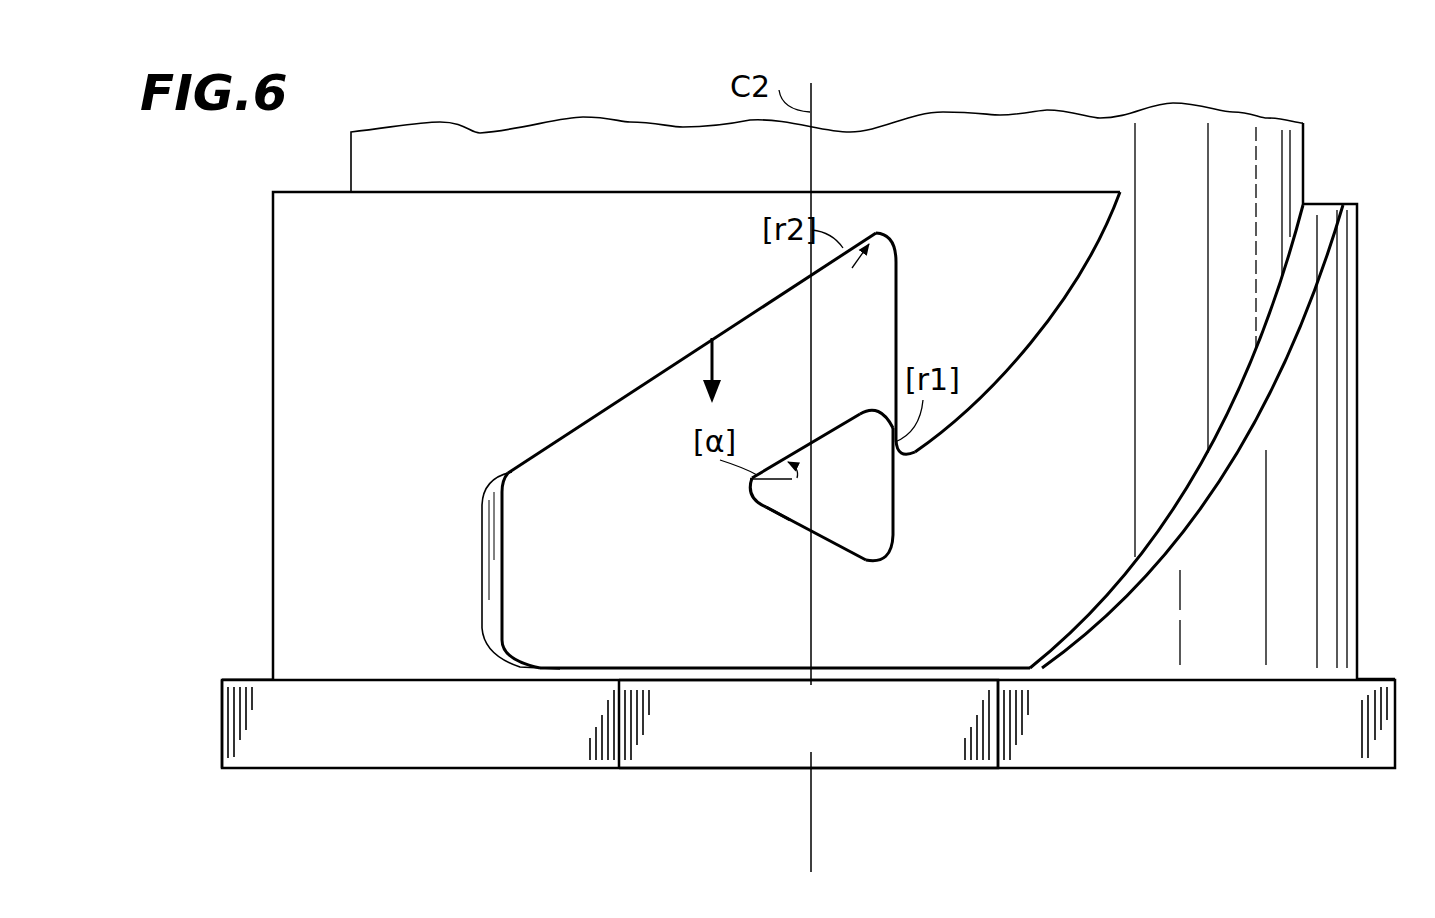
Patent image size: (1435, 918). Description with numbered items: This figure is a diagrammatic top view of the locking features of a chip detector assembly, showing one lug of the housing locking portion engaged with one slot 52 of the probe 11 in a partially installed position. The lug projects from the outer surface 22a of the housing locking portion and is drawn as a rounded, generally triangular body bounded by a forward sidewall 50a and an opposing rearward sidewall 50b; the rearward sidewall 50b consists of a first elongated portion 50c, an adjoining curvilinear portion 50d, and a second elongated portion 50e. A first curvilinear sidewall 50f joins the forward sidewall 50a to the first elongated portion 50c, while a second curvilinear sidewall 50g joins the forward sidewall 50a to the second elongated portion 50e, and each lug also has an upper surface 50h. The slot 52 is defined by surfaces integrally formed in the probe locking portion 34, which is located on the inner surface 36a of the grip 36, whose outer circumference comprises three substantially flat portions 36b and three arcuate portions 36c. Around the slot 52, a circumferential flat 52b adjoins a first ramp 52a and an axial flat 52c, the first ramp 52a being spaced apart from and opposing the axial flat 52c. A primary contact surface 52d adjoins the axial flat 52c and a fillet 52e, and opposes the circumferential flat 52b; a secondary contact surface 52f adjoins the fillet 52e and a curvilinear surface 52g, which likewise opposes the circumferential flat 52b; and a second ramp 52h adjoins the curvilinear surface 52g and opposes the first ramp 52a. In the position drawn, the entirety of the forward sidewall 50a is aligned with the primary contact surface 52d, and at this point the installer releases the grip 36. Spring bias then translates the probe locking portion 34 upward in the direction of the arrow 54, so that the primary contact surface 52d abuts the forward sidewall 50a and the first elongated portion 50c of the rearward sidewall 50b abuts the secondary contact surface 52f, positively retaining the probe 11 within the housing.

The probe 11 is at (200, 598).
The outer surface of housing locking portion 22a is at (1110, 167).
The locking portion 34 is at (238, 386).
The grip 36 is at (1135, 788).
The inner surface 36a is at (1362, 678).
The flat portions 36b is at (455, 742).
The arcuate portions 36c is at (835, 742).
The forward sidewall 50a is at (813, 425).
The rearward sidewall 50b is at (906, 536).
The first elongated portion 50c is at (880, 490).
The curvilinear portion 50d is at (868, 552).
The second elongated portion 50e is at (777, 522).
The first curvilinear sidewall 50f is at (873, 408).
The second curvilinear sidewall 50g is at (748, 492).
The upper surface 50h is at (878, 415).
The slot 52 is at (626, 455).
The first ramp 52a is at (1313, 238).
The circumferential flat 52b is at (645, 668).
The axial flat 52c is at (500, 600).
The primary contact surface 52d is at (762, 300).
The fillet 52e is at (880, 238).
The secondary contact surface 52f is at (893, 270).
The curvilinear surface 52g is at (910, 455).
The second ramp 52h is at (1040, 352).
The arrow 54 is at (685, 385).